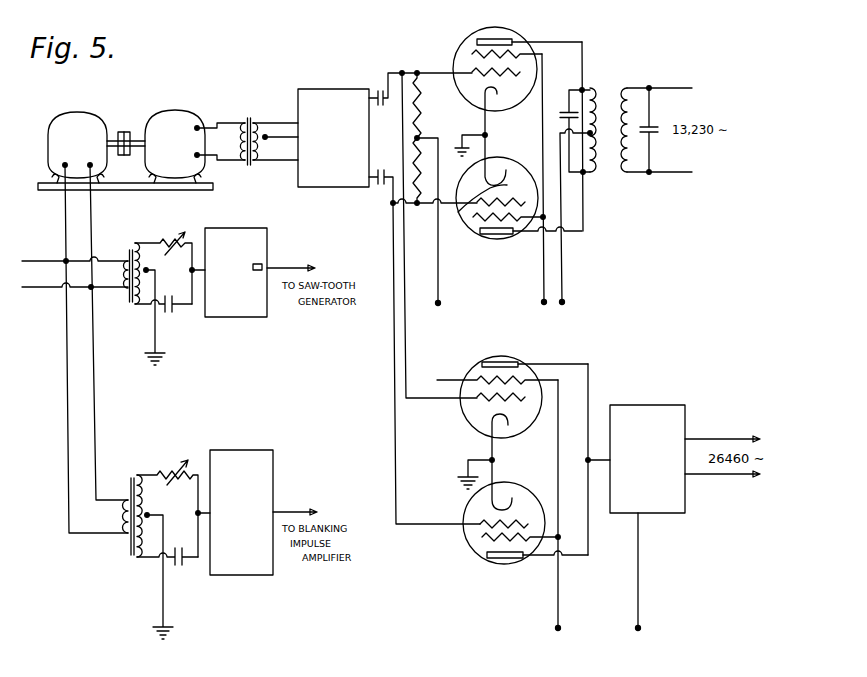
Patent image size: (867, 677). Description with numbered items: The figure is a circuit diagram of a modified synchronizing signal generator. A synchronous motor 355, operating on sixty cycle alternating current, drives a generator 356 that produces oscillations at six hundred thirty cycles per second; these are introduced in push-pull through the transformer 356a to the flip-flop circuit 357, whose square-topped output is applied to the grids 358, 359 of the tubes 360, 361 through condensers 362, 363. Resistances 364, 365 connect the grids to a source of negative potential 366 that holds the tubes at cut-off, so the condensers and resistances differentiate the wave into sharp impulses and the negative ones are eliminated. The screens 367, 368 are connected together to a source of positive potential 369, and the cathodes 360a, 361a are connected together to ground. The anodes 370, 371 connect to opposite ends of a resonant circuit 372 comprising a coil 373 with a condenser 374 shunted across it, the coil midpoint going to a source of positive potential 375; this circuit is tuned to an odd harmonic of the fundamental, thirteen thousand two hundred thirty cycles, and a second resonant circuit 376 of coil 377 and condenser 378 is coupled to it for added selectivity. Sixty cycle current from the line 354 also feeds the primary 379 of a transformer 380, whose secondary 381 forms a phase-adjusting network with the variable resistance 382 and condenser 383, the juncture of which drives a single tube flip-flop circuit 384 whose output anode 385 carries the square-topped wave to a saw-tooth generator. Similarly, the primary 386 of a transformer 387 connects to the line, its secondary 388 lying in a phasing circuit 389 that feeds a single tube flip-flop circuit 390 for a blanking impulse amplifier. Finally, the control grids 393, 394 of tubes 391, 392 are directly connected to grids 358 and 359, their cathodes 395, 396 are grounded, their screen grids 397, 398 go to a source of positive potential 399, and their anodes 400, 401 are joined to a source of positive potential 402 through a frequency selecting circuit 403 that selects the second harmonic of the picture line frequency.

The alternating current line 354 is at (33, 287).
The synchronous motor 355 is at (97, 101).
The generator 356 is at (178, 110).
The transformer 356a is at (256, 108).
The flip-flop circuit 357 is at (325, 89).
The grid 358 is at (466, 71).
The grid 359 is at (459, 228).
The tube 360 is at (500, 71).
The cathode 360a is at (497, 94).
The tube 361 is at (510, 238).
The cathode 361a is at (458, 212).
The condenser 362 is at (380, 90).
The condenser 363 is at (384, 190).
The resistance 364 is at (421, 113).
The resistance 365 is at (415, 157).
The source of negative potential 366 is at (440, 300).
The screen 367 is at (522, 53).
The screen 368 is at (513, 215).
The source of positive potential 369 is at (539, 303).
The anode 370 is at (500, 40).
The anode 371 is at (497, 236).
The resonant circuit 372 is at (590, 86).
The coil 373 is at (591, 172).
The condenser 374 is at (567, 100).
The source of positive potential 375 is at (564, 299).
The resonant circuit 376 is at (638, 88).
The coil 377 is at (628, 170).
The condenser 378 is at (655, 138).
The primary 379 is at (121, 260).
The transformer 380 is at (137, 242).
The secondary 381 is at (148, 304).
The variable resistance 382 is at (168, 238).
The condenser 383 is at (177, 313).
The single tube flip-flop circuit 384 is at (245, 317).
The output anode 385 is at (263, 266).
The primary 386 is at (118, 522).
The transformer 387 is at (132, 556).
The secondary 388 is at (150, 474).
The phasing circuit 389 is at (169, 459).
The single tube flip-flop circuit 390 is at (245, 450).
The tube 391 is at (505, 394).
The tube 392 is at (505, 531).
The control grid 393 is at (488, 397).
The control grid 394 is at (476, 524).
The cathode 395 is at (508, 425).
The cathode 396 is at (512, 498).
The screen grid 397 is at (437, 380).
The screen grid 398 is at (490, 539).
The source of positive potential 399 is at (555, 627).
The anode 400 is at (508, 363).
The anode 401 is at (518, 563).
The source of positive potential 402 is at (632, 628).
The frequency selecting circuit 403 is at (650, 405).